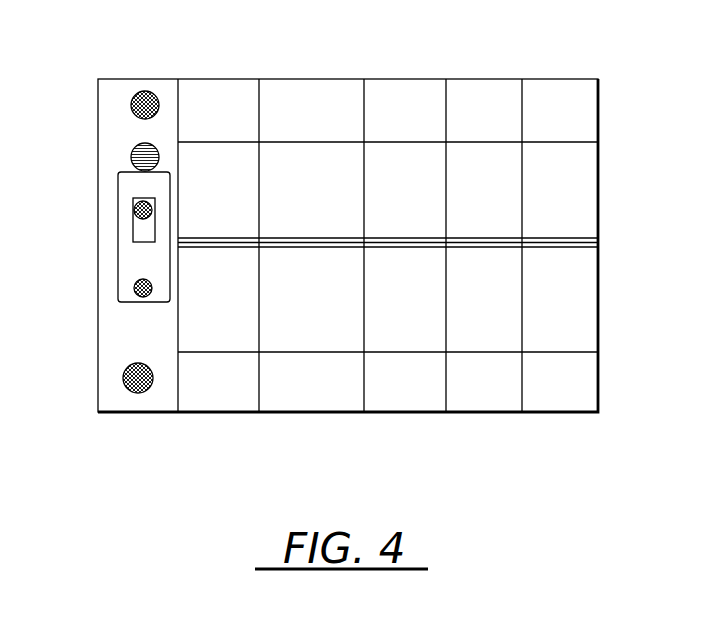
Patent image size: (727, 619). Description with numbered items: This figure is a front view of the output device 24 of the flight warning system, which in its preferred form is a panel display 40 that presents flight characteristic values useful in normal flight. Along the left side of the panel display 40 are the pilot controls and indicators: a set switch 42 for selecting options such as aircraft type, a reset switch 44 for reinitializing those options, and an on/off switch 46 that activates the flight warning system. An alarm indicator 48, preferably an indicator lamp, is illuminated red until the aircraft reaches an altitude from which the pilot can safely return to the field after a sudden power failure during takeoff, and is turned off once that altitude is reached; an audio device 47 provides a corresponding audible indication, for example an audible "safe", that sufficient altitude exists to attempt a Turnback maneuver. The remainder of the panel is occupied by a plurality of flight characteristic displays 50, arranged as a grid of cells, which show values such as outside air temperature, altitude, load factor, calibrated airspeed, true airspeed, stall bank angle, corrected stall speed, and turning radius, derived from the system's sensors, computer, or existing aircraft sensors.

The output device 24 is at (225, 426).
The panel display 40 is at (122, 248).
The set switch 42 is at (155, 92).
The reset switch 44 is at (138, 393).
The on/off switch 46 is at (134, 211).
The audio device 47 is at (131, 157).
The alarm indicator 48 is at (134, 290).
The flight characteristic displays 50 is at (537, 79).